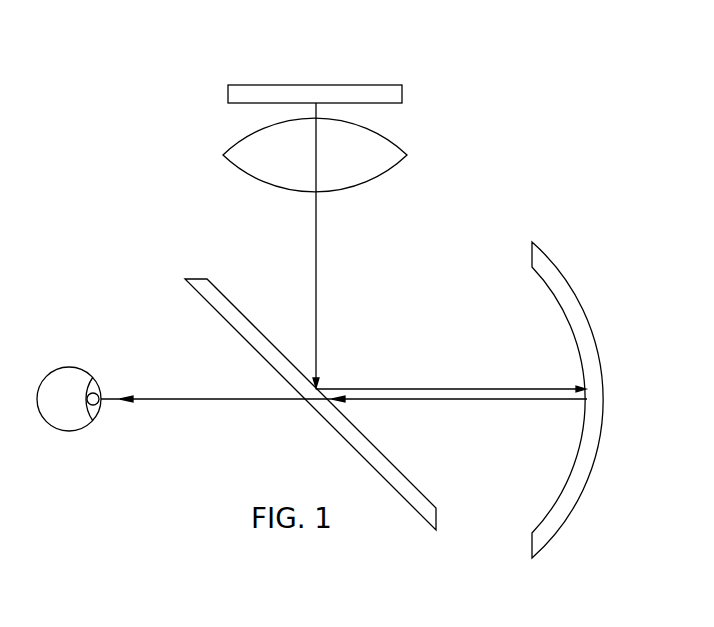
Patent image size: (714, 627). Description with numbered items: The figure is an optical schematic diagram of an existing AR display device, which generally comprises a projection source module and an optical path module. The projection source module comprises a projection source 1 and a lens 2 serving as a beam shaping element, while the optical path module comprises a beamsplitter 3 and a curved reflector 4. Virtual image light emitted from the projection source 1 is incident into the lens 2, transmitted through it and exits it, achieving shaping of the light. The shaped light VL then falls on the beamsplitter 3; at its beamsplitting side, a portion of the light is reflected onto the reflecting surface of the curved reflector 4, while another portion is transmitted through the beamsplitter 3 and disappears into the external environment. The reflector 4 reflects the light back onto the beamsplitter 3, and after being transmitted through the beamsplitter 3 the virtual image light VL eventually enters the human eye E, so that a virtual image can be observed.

The projection source 1 is at (382, 96).
The lens 2 is at (393, 158).
The beamsplitter 3 is at (198, 278).
The curved reflector 4 is at (558, 278).
The human eye E is at (84, 380).
The virtual image light VL is at (330, 245).